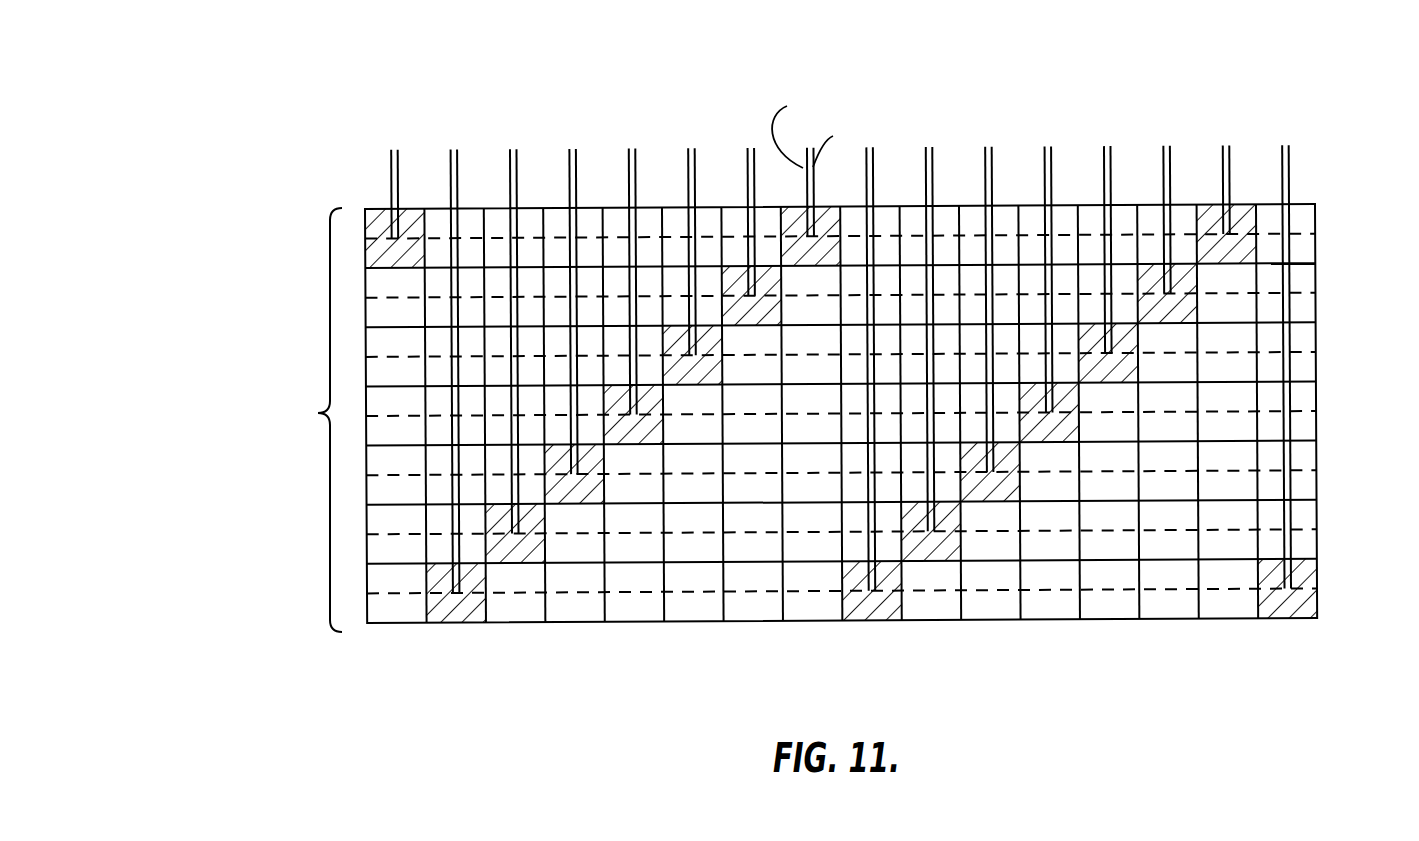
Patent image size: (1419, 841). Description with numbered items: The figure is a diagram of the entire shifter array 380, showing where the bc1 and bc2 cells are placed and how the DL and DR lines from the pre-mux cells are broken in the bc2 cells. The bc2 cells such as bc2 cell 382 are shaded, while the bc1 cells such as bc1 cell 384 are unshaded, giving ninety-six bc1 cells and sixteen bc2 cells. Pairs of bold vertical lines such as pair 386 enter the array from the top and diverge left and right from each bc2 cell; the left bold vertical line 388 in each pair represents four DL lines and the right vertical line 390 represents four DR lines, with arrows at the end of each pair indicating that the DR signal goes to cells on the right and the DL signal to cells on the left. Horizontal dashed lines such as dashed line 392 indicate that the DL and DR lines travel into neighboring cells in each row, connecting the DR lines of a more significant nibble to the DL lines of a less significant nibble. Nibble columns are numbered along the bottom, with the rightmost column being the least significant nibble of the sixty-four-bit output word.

The shifter array 380 is at (1317, 78).
The bc2 cell 382 is at (406, 222).
The bc1 cell 384 is at (463, 225).
The pair of bold vertical lines 386 is at (570, 289).
The left bold vertical line 388 is at (569, 182).
The right vertical line 390 is at (578, 177).
The horizontal dashed line 392 is at (585, 224).